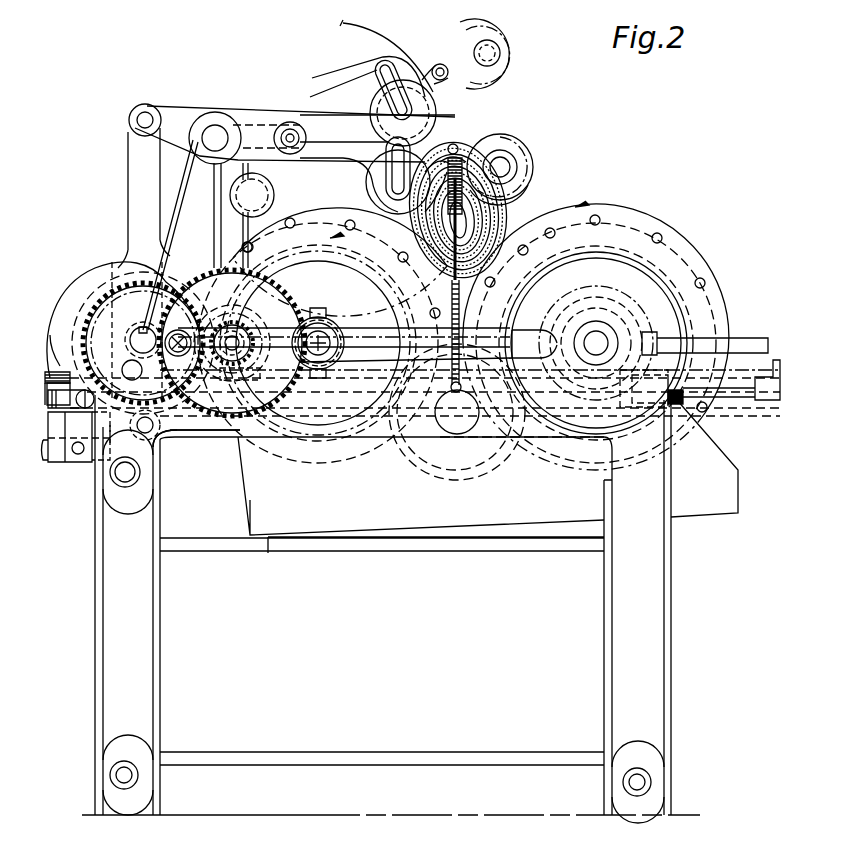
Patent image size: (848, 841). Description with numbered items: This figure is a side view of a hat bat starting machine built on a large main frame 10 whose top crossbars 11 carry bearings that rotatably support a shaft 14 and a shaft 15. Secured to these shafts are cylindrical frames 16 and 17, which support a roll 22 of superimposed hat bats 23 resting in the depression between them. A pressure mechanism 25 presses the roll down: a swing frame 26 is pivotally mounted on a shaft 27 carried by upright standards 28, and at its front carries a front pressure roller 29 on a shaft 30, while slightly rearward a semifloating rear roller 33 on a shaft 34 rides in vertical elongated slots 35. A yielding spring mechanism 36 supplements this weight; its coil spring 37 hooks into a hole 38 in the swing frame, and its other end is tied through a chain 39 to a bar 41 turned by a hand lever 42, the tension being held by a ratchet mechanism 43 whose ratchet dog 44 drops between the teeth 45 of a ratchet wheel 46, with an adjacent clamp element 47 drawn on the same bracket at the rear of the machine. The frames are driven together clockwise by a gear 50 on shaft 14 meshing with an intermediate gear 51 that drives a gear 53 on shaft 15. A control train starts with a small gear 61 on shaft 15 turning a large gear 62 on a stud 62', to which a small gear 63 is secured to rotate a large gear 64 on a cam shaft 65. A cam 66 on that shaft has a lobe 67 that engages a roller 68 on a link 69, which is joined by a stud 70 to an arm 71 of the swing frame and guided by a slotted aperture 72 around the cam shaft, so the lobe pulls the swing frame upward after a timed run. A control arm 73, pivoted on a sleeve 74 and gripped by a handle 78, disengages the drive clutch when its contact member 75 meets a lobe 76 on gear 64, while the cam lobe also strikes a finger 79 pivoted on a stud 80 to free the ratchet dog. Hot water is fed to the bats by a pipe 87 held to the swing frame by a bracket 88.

The main frame 10 is at (670, 640).
The top crossbars 11 is at (537, 437).
The shaft 14 is at (597, 340).
The shaft 15 is at (323, 372).
The cylindrical frame 16 is at (700, 258).
The cylindrical frame 17 is at (300, 212).
The roll 22 is at (500, 220).
The hat bats 23 is at (482, 258).
The pressure mechanism 25 is at (290, 116).
The swing frame 26 is at (423, 32).
The shaft 27 is at (213, 130).
The upright standards 28 is at (227, 215).
The front pressure roller 29 is at (520, 40).
The shaft 30 is at (503, 162).
The semifloating rear roller 33 is at (367, 176).
The shaft 34 is at (392, 180).
The vertical elongated slots 35 is at (398, 195).
The spring mechanism 36 is at (465, 312).
The coil spring 37 is at (530, 188).
The hole 38 is at (455, 144).
The chain 39 is at (462, 325).
The bar 41 is at (740, 400).
The hand lever 42 is at (780, 375).
The ratchet mechanism 43 is at (42, 378).
The ratchet dog 44 is at (60, 432).
The teeth 45 is at (64, 374).
The ratchet wheel 46 is at (47, 385).
The bolt 47 is at (55, 402).
The gear 50 is at (620, 250).
The intermediate gear 51 is at (473, 477).
The gear 53 is at (407, 303).
The small gear 61 is at (332, 330).
The large gear 62 is at (234, 343).
The stud 62' is at (232, 335).
The small gear 63 is at (246, 330).
The large gear 64 is at (173, 297).
The cam shaft 65 is at (146, 326).
The cam 66 is at (50, 330).
The lobe 67 is at (74, 292).
The roller 68 is at (160, 420).
The link 69 is at (142, 190).
The stud 70 is at (130, 118).
The arm 71 is at (168, 115).
The slotted aperture 72 is at (138, 262).
The control arm 73 is at (392, 335).
The sleeve 74 is at (320, 336).
The contact member 75 is at (182, 358).
The lobe 76 is at (122, 365).
The handle 78 is at (752, 343).
The finger 79 is at (108, 427).
The stud 80 is at (77, 456).
The pipe 87 is at (450, 150).
The bracket 88 is at (448, 66).